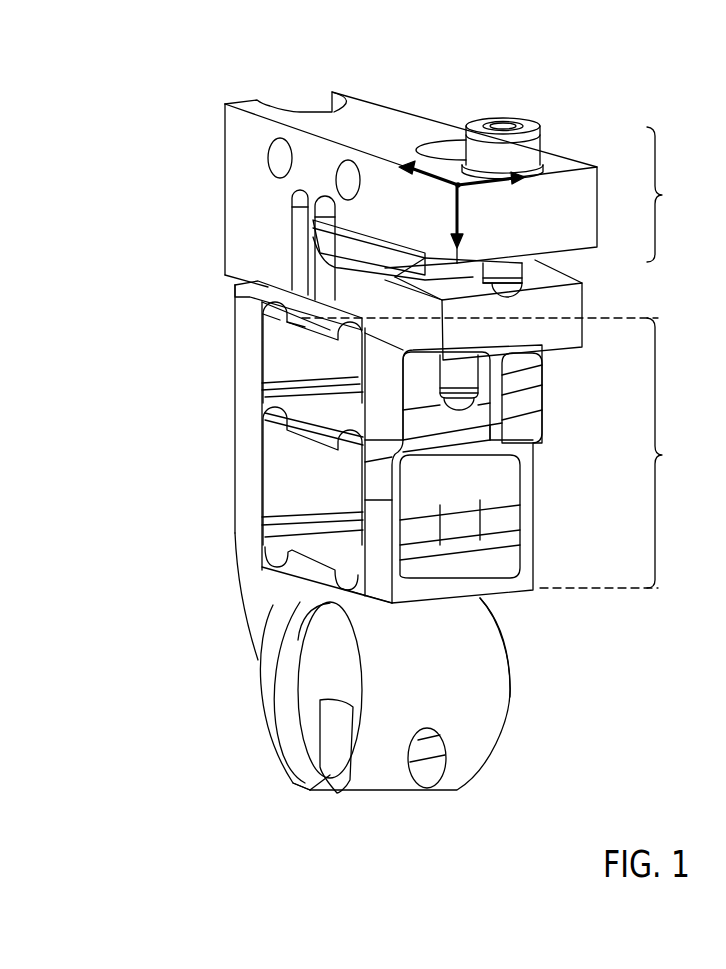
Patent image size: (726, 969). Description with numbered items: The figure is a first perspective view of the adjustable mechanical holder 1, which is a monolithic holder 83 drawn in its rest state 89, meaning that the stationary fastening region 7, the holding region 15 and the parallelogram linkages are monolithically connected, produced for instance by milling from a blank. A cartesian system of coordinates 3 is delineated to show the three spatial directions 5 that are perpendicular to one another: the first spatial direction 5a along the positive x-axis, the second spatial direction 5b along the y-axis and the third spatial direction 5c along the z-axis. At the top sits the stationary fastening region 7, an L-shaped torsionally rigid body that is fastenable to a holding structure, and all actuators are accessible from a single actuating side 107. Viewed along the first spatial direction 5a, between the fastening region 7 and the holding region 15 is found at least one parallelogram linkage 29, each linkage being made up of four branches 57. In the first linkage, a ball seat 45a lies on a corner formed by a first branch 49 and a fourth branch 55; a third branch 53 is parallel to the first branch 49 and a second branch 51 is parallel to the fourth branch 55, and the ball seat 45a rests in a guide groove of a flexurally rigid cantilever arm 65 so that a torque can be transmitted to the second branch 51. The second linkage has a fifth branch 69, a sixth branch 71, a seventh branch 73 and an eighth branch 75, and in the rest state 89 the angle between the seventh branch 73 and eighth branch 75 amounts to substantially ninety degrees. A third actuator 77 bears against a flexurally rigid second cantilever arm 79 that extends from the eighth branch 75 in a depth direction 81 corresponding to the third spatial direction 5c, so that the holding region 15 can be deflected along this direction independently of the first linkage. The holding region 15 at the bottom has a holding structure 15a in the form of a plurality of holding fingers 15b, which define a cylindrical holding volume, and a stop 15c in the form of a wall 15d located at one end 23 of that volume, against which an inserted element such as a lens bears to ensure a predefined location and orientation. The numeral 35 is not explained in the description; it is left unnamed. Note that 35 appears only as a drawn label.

The mechanical holder 1 is at (530, 108).
The actuating side 107 is at (453, 99).
The monolithic holder 83 is at (530, 108).
The rest state 89 is at (548, 70).
The spatial directions 5 is at (407, 193).
The first spatial direction 5a is at (462, 226).
The second spatial direction 5b is at (437, 190).
The third spatial direction 5c is at (524, 197).
The depth direction 81 is at (480, 190).
The cartesian system of coordinates 3 is at (443, 218).
The stationary fastening region 7 is at (660, 194).
The ball seat 45a is at (528, 265).
The flexurally rigid cantilever arm 65 is at (568, 303).
The third actuator 77 is at (312, 247).
The first branch 49 is at (300, 330).
The fourth branch 55 is at (240, 403).
The spring element 35 is at (307, 432).
The third branch 53 is at (300, 562).
The branches 57 is at (396, 402).
The second branch 51 is at (396, 445).
The eighth branch 75 is at (378, 482).
The fifth branch 69 is at (428, 363).
The flexurally rigid second cantilever arm 79 is at (537, 427).
The sixth branch 71 is at (520, 470).
The seventh branch 73 is at (480, 582).
The parallelogram linkage 29 is at (498, 460).
The holding region 15 is at (557, 598).
The stop 15c is at (257, 690).
The wall 15d is at (300, 660).
The holding fingers 15b is at (447, 786).
The end 23 is at (304, 798).
The holding structure 15a is at (503, 798).